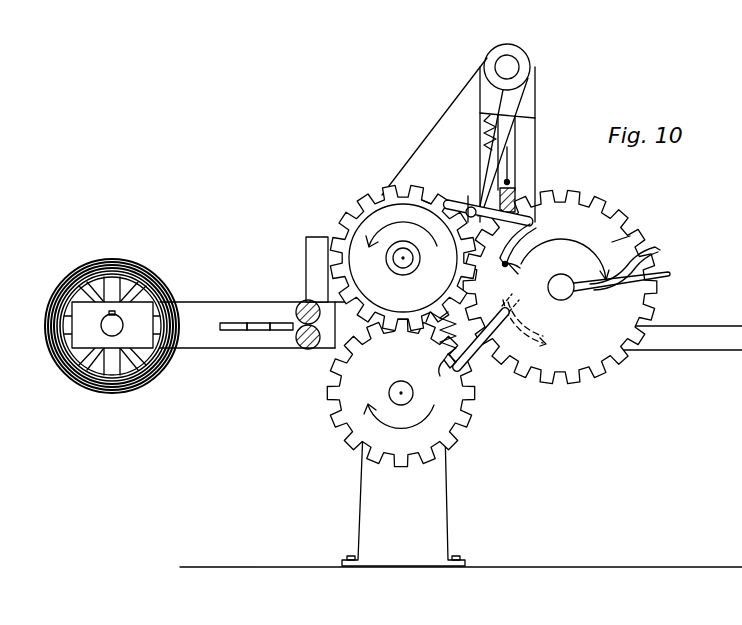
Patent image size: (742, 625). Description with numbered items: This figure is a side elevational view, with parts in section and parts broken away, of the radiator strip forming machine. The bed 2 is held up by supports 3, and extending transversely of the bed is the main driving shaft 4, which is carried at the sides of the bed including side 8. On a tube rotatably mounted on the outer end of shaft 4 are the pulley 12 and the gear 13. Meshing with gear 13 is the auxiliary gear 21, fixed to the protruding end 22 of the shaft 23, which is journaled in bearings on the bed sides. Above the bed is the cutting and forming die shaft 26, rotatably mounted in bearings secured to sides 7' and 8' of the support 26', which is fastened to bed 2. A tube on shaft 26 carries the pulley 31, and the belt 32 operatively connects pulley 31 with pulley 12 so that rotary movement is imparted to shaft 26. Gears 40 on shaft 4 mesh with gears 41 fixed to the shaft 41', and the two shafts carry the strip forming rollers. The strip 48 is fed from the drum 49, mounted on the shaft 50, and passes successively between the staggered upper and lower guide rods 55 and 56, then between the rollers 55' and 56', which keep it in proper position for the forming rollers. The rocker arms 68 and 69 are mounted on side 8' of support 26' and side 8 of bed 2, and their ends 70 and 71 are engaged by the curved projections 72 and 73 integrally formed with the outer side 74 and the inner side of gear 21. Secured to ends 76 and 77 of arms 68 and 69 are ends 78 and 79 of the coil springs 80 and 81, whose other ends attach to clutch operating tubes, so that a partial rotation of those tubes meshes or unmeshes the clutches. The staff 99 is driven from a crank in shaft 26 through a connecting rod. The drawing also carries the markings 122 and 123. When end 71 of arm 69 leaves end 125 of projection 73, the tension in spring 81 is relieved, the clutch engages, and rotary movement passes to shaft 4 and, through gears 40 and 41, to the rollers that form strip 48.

The bed 2 is at (715, 348).
The supports 3 is at (441, 487).
The main driving shaft 4 is at (396, 254).
The side 8 is at (450, 330).
The side 8' is at (534, 144).
The side 7' is at (538, 152).
The pulley 12 is at (365, 225).
The gear 13 is at (358, 221).
The auxiliary gear 21 is at (623, 213).
The protruding end 22 is at (668, 274).
The shaft 23 is at (660, 250).
The cutting and forming die shaft 26 is at (523, 54).
The support 26' is at (548, 130).
The pulley 31 is at (527, 66).
The belt 32 is at (432, 118).
The gears 40 is at (426, 201).
The gears 41 is at (425, 392).
The shaft 41' is at (446, 404).
The strip 48 is at (218, 326).
The drum 49 is at (153, 259).
The shaft 50 is at (123, 320).
The upper guide rod 55 is at (280, 303).
The roller 55' is at (298, 280).
The lower guide rod 56 is at (248, 351).
The roller 56' is at (302, 357).
The rocker arm 68 is at (520, 206).
The rocker arm 69 is at (488, 343).
The end 70 is at (540, 211).
The end 71 is at (503, 277).
The curved projection 72 is at (537, 246).
The curved projection 73 is at (528, 338).
The outer side 74 is at (612, 242).
The end 76 is at (467, 211).
The end 77 is at (452, 366).
The end 78 is at (468, 208).
The end 79 is at (445, 355).
The coil spring 80 is at (486, 139).
The coil spring 81 is at (420, 350).
The staff 99 is at (512, 141).
The arm 122 is at (532, 224).
The pin 123 is at (526, 278).
The end 125 is at (545, 343).